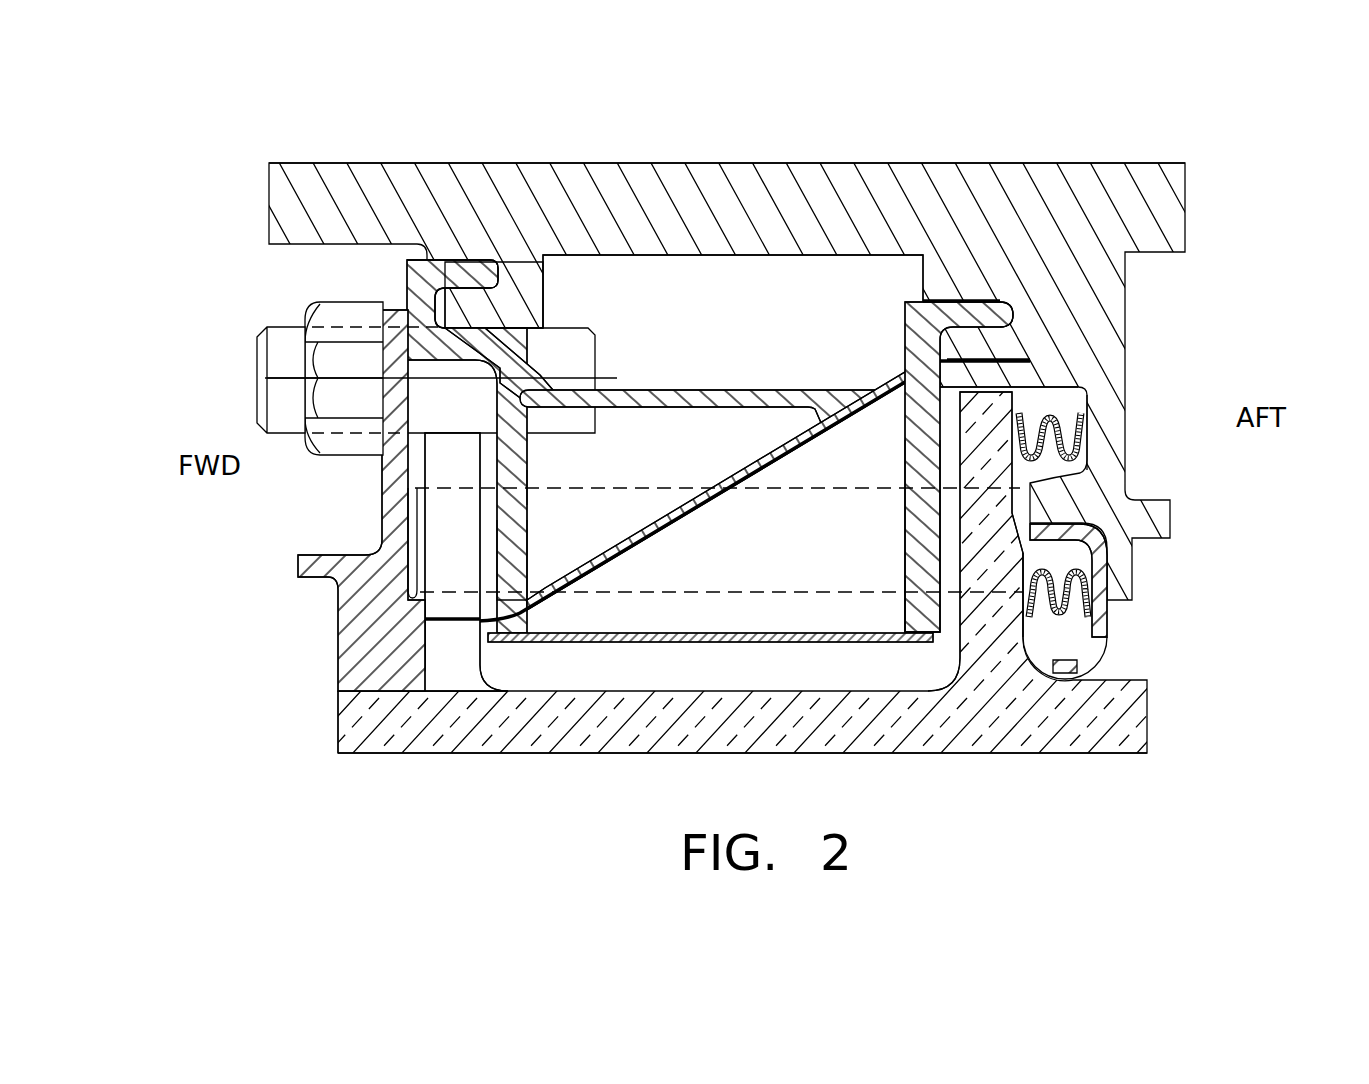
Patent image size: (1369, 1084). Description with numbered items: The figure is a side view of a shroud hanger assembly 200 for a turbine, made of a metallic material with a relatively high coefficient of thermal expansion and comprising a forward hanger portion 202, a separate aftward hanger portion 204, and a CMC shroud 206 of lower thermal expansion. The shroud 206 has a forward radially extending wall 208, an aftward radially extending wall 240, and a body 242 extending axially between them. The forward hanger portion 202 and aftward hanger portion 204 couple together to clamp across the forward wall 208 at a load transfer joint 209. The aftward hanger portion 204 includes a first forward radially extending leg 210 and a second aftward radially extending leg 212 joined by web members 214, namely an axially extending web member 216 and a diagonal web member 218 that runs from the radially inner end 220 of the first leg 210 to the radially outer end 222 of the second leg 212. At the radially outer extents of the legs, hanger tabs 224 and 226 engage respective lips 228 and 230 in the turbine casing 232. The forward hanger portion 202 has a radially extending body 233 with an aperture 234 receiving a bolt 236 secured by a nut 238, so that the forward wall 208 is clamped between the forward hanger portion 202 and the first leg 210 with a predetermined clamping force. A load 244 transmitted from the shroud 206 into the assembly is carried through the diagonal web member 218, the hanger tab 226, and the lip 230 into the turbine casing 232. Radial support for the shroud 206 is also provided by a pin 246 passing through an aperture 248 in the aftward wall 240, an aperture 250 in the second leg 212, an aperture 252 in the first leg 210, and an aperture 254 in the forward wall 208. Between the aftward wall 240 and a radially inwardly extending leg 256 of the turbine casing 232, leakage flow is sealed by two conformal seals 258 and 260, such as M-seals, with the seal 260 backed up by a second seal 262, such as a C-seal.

The shroud hanger assembly 200 is at (1222, 386).
The forward hanger portion 202 is at (225, 619).
The aftward hanger portion 204 is at (903, 326).
The shroud 206 is at (1140, 733).
The forward radially extending wall 208 is at (447, 608).
The load transfer joint 209 is at (455, 678).
The first forward radially extending leg 210 is at (512, 455).
The second aftward radially extending leg 212 is at (902, 443).
The web members 214 is at (727, 333).
The axially extending web member 216 is at (657, 390).
The diagonal web member 218 is at (720, 512).
The radially inner end 220 is at (512, 550).
The radially outer end 222 is at (912, 366).
The hanger tab 224 is at (467, 274).
The hanger tab 226 is at (967, 300).
The lip 228 is at (484, 306).
The lip 230 is at (963, 373).
The turbine casing 232 is at (780, 178).
The radially extending body 233 is at (395, 518).
The aperture 234 is at (383, 433).
The bolt 236 is at (285, 365).
The nut 238 is at (343, 352).
The aftward radially extending wall 240 is at (957, 647).
The body 242 is at (620, 728).
The load 244 is at (1010, 353).
The pin 246 is at (635, 595).
The aperture 248 is at (1030, 483).
The aperture 250 is at (903, 598).
The aperture 252 is at (530, 487).
The aperture 254 is at (413, 603).
The radially inwardly extending leg 256 is at (1107, 413).
The conformal seal 258 is at (1063, 432).
The conformal seal 260 is at (1073, 603).
The second seal 262 is at (1105, 655).